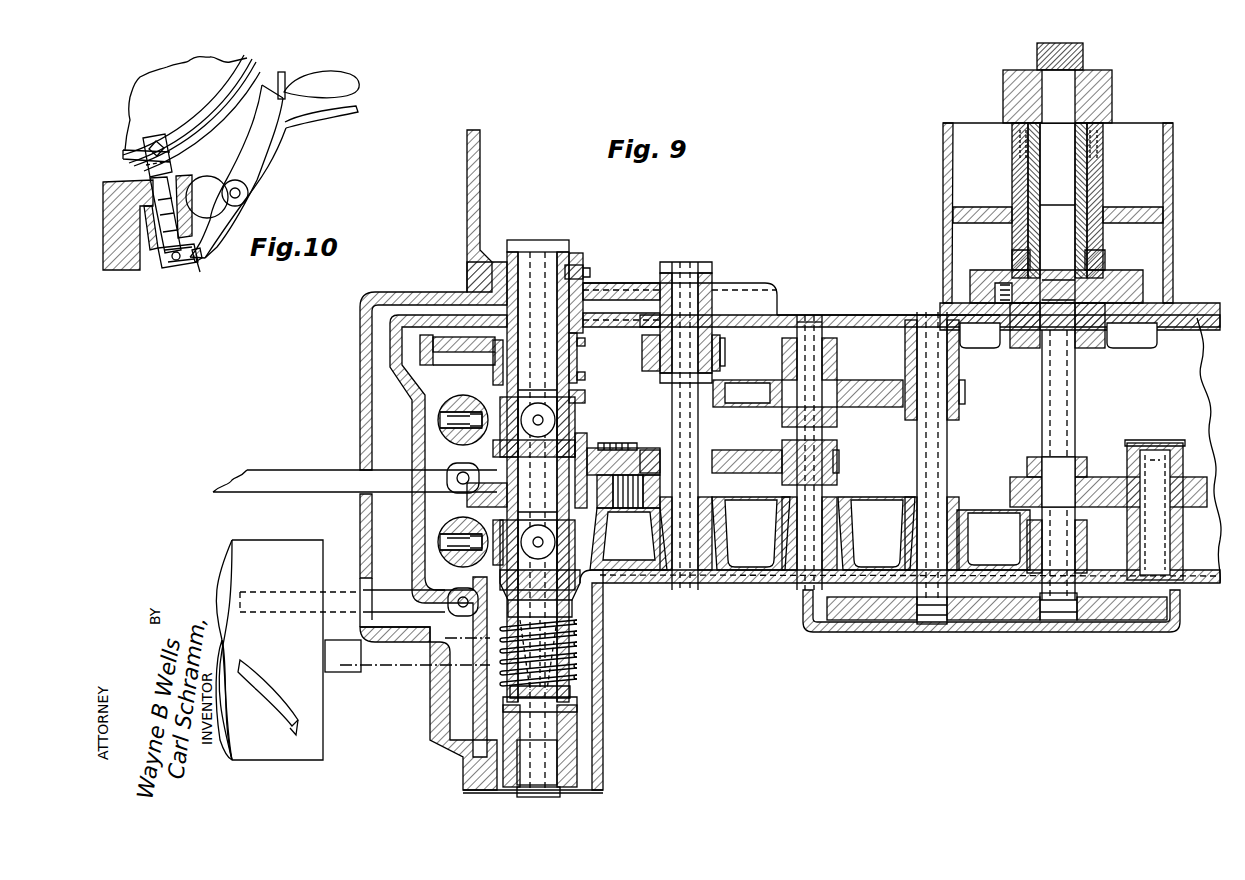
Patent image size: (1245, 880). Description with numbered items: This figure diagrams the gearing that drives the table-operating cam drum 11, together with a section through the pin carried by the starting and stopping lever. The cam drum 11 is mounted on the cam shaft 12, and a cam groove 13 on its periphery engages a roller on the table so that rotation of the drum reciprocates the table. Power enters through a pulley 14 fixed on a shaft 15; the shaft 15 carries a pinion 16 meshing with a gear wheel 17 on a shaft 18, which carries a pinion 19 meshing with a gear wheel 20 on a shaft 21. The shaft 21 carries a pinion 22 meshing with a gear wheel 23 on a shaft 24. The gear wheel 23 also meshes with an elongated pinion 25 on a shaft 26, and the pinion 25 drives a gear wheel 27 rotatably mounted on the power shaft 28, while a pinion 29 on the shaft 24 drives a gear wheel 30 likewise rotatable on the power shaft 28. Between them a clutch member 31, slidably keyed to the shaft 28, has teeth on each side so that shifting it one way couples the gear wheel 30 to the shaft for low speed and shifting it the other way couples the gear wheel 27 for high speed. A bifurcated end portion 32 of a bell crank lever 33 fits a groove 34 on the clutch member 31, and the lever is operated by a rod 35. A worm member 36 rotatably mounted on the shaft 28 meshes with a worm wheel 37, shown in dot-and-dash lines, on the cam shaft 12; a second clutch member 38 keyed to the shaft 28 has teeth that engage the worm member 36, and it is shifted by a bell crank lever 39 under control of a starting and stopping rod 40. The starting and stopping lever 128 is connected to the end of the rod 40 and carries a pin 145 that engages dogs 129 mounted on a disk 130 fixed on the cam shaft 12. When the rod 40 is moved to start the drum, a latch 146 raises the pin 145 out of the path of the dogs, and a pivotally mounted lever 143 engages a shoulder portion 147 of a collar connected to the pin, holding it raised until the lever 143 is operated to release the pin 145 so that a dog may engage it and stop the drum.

In FIG. 9, the cam drum 11 is at (290, 540).
In FIG. 9, the cam shaft 12 is at (372, 656).
In FIG. 9, the cam groove 13 is at (275, 684).
In FIG. 9, the pulley 14 is at (1168, 155).
In FIG. 9, the shaft 15 is at (1065, 624).
In FIG. 9, the pinion 16 is at (1078, 615).
In FIG. 9, the gear wheel 17 is at (870, 622).
In FIG. 9, the shaft 18 is at (935, 626).
In FIG. 9, the pinion 19 is at (960, 393).
In FIG. 9, the gear wheel 20 is at (872, 400).
In FIG. 9, the shaft 21 is at (806, 335).
In FIG. 9, the pinion 22 is at (840, 465).
In FIG. 9, the gear wheel 23 is at (738, 474).
In FIG. 9, the shaft 24 is at (685, 585).
In FIG. 9, the elongated pinion 25 is at (655, 426).
In FIG. 9, the shaft 26 is at (603, 590).
In FIG. 9, the gear wheel 27 is at (465, 493).
In FIG. 9, the power shaft 28 is at (545, 240).
In FIG. 9, the pinion 29 is at (725, 351).
In FIG. 9, the gear wheel 30 is at (420, 348).
In FIG. 9, the clutch member 31 is at (578, 376).
In FIG. 9, the bifurcated end portion 32 is at (495, 396).
In FIG. 9, the bell crank lever 33 is at (452, 396).
In FIG. 9, the groove 34 is at (585, 406).
In FIG. 9, the rod 35 is at (330, 472).
In FIG. 9, the worm member 36 is at (580, 678).
In FIG. 9, the worm wheel 37 is at (572, 692).
In FIG. 9, the second clutch member 38 is at (497, 520).
In FIG. 9, the bell crank lever 39 is at (460, 552).
In FIG. 9, the starting and stopping rod 40 is at (334, 594).
In FIG. 10, the starting and stopping lever 128 is at (352, 84).
In FIG. 10, the dogs 129 is at (163, 135).
In FIG. 10, the disk 130 is at (250, 70).
In FIG. 10, the pivotally mounted lever 143 is at (156, 262).
In FIG. 10, the pin 145 is at (189, 214).
In FIG. 10, the latch 146 is at (265, 173).
In FIG. 10, the shoulder portion 147 is at (200, 265).